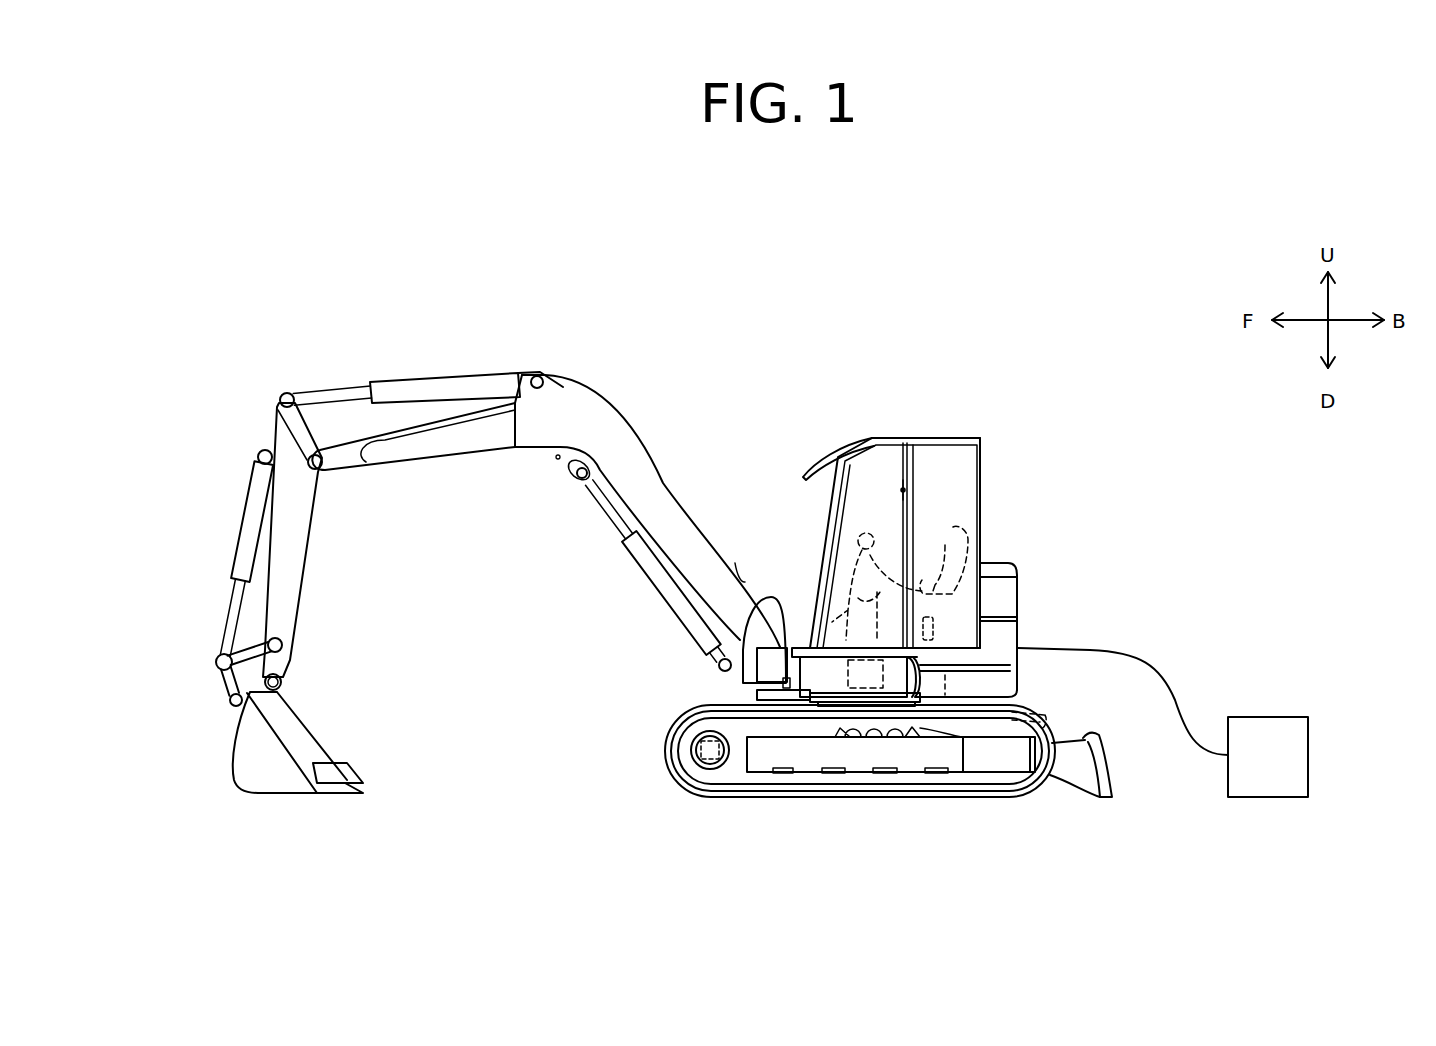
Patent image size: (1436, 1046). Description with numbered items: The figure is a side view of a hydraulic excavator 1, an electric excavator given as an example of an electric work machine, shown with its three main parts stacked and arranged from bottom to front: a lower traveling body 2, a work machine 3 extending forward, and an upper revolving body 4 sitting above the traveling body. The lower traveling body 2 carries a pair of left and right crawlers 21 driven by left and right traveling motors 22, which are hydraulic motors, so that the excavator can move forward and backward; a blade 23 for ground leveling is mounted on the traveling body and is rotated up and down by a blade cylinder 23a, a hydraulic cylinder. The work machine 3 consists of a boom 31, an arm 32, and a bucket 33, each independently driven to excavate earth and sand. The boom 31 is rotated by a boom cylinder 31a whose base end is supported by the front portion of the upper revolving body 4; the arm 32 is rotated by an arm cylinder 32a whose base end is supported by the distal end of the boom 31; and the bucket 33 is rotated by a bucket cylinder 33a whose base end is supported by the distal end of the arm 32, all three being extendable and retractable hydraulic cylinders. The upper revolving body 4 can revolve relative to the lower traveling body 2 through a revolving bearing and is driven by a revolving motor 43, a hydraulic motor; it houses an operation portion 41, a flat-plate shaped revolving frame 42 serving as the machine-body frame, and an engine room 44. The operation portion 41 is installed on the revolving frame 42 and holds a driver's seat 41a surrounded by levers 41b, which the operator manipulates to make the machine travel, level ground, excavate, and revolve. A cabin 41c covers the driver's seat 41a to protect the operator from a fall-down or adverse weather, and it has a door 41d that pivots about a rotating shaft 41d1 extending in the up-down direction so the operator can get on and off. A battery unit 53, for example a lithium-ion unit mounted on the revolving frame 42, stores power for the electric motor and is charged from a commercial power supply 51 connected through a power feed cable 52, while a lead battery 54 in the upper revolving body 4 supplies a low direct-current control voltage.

The hydraulic excavator 1 is at (948, 328).
The lower traveling body 2 is at (650, 728).
The crawlers 21 is at (665, 752).
The traveling motors 22 is at (705, 768).
The blade 23 is at (1053, 743).
The blade cylinder 23a is at (1035, 708).
The work machine 3 is at (440, 536).
The boom 31 is at (467, 453).
The boom cylinder 31a is at (672, 612).
The arm 32 is at (295, 571).
The arm cylinder 32a is at (442, 373).
The bucket 33 is at (242, 773).
The bucket cylinder 33a is at (246, 519).
The upper revolving body 4 is at (1064, 469).
The operation portion 41 is at (997, 398).
The driver's seat 41a is at (955, 527).
The levers 41b is at (842, 521).
The cabin 41c is at (930, 440).
The door 41d is at (832, 483).
The rotating shaft 41d1 is at (903, 490).
The revolving frame 42 is at (740, 703).
The revolving motor 43 is at (838, 704).
The engine room 44 is at (1013, 567).
The commercial power supply 51 is at (1325, 733).
The power feed cable 52 is at (1150, 660).
The battery unit 53 is at (1018, 652).
The lead battery 54 is at (937, 632).